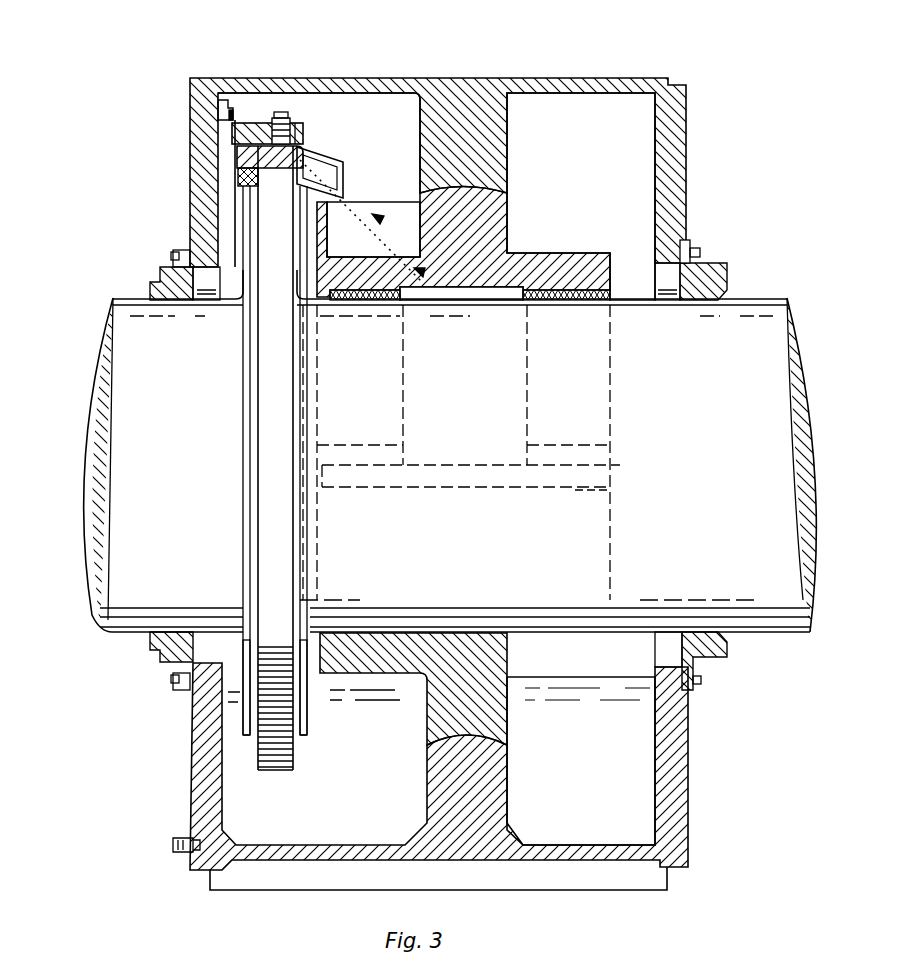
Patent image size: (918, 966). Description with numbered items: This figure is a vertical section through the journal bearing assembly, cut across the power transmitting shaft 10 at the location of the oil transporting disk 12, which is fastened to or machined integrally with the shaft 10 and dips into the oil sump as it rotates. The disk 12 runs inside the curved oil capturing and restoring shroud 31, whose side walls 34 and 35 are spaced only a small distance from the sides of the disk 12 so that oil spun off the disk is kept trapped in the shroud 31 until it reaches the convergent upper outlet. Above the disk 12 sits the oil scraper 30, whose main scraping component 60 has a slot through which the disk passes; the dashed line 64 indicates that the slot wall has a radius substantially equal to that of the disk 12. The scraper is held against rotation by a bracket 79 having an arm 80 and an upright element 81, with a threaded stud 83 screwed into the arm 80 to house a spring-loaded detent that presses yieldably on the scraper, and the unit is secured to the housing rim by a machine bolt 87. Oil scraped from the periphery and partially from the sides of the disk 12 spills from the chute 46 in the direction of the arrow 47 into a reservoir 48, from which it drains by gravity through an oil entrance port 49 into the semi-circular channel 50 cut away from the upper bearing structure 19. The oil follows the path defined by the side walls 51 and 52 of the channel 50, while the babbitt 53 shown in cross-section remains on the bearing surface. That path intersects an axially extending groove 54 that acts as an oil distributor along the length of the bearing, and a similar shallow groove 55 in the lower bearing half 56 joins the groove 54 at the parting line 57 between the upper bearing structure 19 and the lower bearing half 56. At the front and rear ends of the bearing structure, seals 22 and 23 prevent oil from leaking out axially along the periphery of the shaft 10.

The power transmitting shaft 10 is at (117, 516).
The oil transporting disk 12 is at (257, 551).
The upper bearing structure 19 is at (565, 246).
The seal 22 is at (708, 265).
The seal 23 is at (163, 267).
The oil scraper 30 is at (348, 139).
The oil capturing and restoring shroud 31 is at (243, 207).
The side wall of shroud 34 is at (243, 717).
The side wall of shroud 35 is at (307, 731).
The chute 46 is at (338, 160).
The arrow 47 is at (382, 222).
The reservoir 48 is at (335, 245).
The oil entrance port 49 is at (430, 294).
The semi-circular channel 50 is at (486, 292).
The side wall of channel 51 is at (400, 367).
The side wall of channel 52 is at (527, 373).
The babbitt 53 is at (586, 297).
The axially extending groove 54 is at (330, 437).
The shallow groove 55 is at (585, 492).
The lower bearing half 56 is at (547, 681).
The parting line 57 is at (613, 468).
The main scraping component 60 is at (236, 182).
The dashed line on wall 64 is at (235, 156).
The bracket 79 is at (305, 128).
The arm 80 is at (286, 128).
The upright element 81 is at (222, 103).
The threaded stud 83 is at (272, 124).
The machine bolt 87 is at (232, 117).